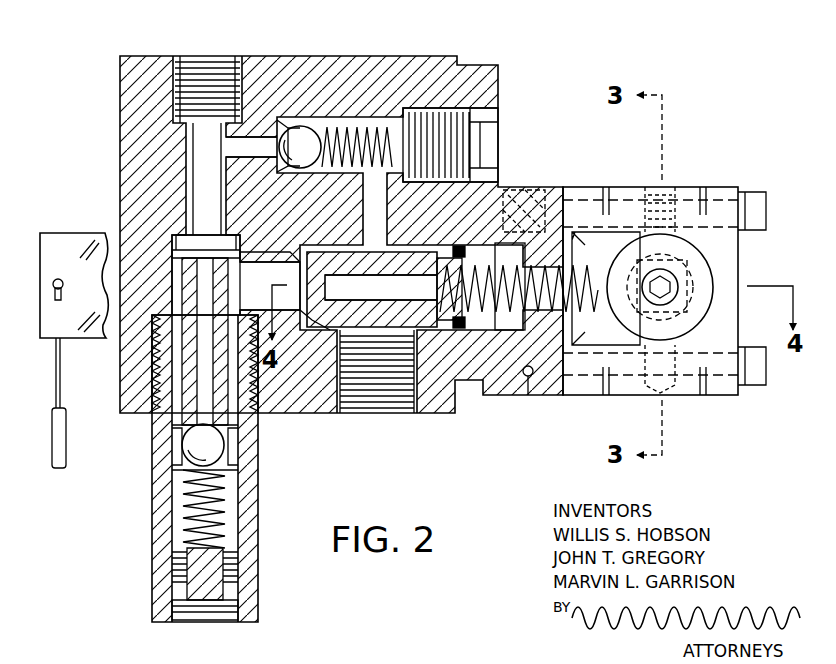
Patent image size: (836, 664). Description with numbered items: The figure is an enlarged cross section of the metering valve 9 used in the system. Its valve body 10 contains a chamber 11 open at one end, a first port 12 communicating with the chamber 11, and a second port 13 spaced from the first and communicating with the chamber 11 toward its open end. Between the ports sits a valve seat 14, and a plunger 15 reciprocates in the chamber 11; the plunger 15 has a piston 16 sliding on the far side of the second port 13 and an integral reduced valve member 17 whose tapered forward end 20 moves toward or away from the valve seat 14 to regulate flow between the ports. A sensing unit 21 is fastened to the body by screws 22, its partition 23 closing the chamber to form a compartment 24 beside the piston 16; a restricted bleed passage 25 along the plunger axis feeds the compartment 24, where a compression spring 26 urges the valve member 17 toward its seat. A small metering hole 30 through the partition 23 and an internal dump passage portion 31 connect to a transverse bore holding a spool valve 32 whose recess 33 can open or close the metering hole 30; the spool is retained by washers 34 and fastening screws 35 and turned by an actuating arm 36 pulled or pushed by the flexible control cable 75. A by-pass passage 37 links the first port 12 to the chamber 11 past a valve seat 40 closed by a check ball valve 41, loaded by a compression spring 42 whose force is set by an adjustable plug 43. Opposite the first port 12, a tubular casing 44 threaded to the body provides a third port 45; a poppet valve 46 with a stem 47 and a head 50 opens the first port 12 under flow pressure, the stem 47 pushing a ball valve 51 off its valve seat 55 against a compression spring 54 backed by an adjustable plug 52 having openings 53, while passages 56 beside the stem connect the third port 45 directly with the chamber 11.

The valve assembly 9 is at (108, 60).
The valve body 10 is at (130, 90).
The chamber 11 is at (262, 316).
The first port 12 is at (193, 172).
The second port 13 is at (395, 414).
The valve seat 14 is at (315, 248).
The plunger 15 is at (400, 250).
The piston 16 is at (446, 248).
The valve member 17 is at (350, 252).
The tapered forward end 20 is at (300, 258).
The sensing unit 21 is at (706, 183).
The screws 22 is at (768, 210).
The partition 23 is at (506, 214).
The compartment 24 is at (500, 332).
The bleed passage 25 is at (314, 320).
The compression spring 26 is at (470, 262).
The metering hole 30 is at (628, 300).
The internal dump passage portion 31 is at (527, 378).
The spool valve 32 is at (702, 280).
The recess 33 is at (634, 302).
The washers 34 is at (712, 300).
The fastening screws 35 is at (676, 300).
The actuating arm 36 is at (78, 238).
The by-pass passage 37 is at (250, 152).
The valve seat 40 is at (290, 126).
The check ball valve 41 is at (300, 130).
The compression spring 42 is at (355, 125).
The adjustable plug 43 is at (500, 124).
The tubular casing 44 is at (152, 508).
The third port 45 is at (240, 498).
The poppet valve 46 is at (178, 291).
The stem 47 is at (185, 375).
The head 50 is at (209, 232).
The ball valve 51 is at (186, 452).
The adjustable plug 52 is at (205, 612).
The openings 53 is at (174, 588).
The compression spring 54 is at (226, 532).
The valve seat 55 is at (226, 452).
The passages 56 is at (170, 320).
The flexible control cable 75 is at (52, 448).